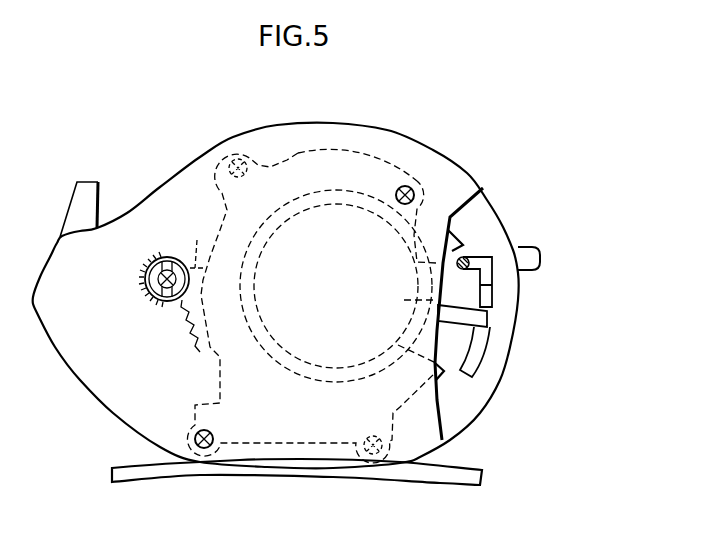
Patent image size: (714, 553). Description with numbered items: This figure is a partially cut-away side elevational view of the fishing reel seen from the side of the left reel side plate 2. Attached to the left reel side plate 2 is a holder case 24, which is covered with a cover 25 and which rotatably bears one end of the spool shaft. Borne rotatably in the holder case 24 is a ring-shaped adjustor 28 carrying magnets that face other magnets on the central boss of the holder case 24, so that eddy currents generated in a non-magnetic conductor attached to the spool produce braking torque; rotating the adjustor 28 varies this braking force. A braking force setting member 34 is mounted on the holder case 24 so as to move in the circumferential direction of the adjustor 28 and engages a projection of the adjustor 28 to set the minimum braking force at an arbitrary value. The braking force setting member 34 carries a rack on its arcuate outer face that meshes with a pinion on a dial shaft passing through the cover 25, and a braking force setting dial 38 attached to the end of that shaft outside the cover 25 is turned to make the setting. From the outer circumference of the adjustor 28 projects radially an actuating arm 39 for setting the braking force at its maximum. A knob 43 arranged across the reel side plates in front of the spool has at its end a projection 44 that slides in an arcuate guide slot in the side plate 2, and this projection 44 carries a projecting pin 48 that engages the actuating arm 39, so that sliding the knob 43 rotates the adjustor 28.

The left reel side plate 2 is at (480, 218).
The holder case 24 is at (290, 162).
The cover 25 is at (363, 137).
The adjustor 28 is at (271, 356).
The braking force setting member 34 is at (196, 246).
The braking force setting dial 38 is at (147, 281).
The actuating arm 39 is at (487, 318).
The knob 43 is at (537, 253).
The projection 44 is at (490, 272).
The projecting pin 48 is at (457, 263).